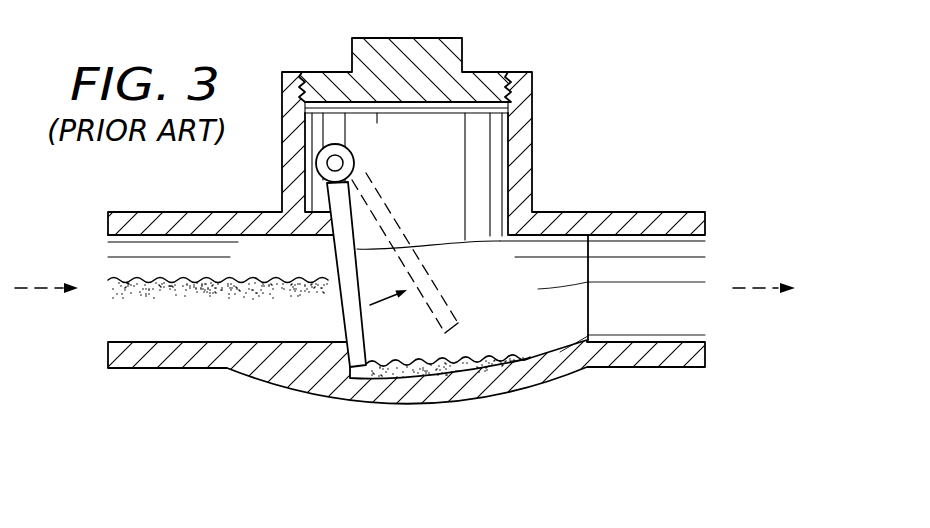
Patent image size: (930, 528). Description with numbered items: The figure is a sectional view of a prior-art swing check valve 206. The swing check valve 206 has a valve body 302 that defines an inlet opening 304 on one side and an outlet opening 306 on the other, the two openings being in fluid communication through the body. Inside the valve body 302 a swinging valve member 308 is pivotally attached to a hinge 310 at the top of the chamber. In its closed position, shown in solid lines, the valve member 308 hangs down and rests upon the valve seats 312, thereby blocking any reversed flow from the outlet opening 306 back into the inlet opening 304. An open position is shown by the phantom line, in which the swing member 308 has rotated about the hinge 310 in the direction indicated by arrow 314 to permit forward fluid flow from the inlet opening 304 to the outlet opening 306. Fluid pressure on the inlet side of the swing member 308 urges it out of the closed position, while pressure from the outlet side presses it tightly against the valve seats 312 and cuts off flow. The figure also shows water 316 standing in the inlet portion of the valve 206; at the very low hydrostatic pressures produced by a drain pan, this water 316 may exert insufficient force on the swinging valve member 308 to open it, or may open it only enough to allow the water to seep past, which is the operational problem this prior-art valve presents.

The swing check valve 206 is at (553, 84).
The valve body 302 is at (533, 173).
The inlet opening 304 is at (138, 241).
The outlet opening 306 is at (676, 238).
The swinging valve member 308 is at (355, 277).
The hinge 310 is at (354, 163).
The valve seats 312 is at (344, 230).
The arrow 314 is at (386, 300).
The water 316 is at (197, 327).